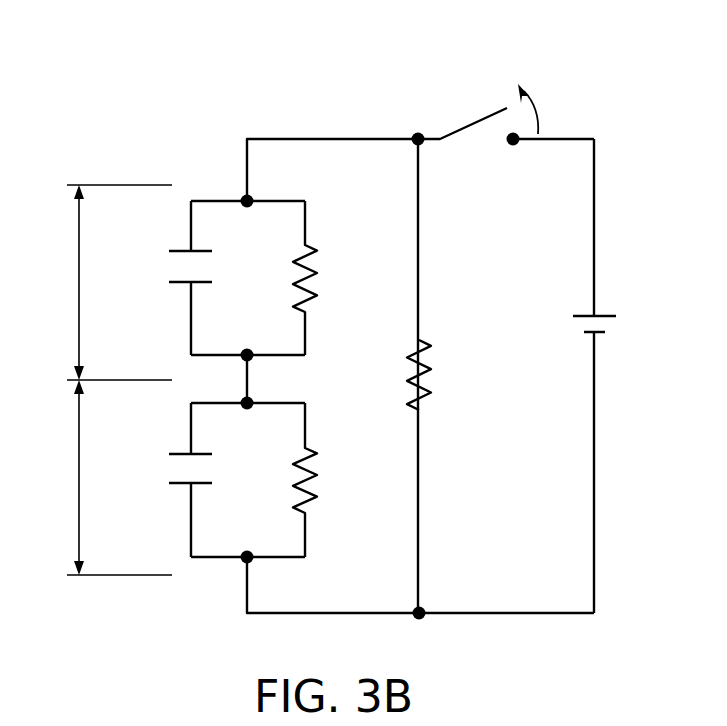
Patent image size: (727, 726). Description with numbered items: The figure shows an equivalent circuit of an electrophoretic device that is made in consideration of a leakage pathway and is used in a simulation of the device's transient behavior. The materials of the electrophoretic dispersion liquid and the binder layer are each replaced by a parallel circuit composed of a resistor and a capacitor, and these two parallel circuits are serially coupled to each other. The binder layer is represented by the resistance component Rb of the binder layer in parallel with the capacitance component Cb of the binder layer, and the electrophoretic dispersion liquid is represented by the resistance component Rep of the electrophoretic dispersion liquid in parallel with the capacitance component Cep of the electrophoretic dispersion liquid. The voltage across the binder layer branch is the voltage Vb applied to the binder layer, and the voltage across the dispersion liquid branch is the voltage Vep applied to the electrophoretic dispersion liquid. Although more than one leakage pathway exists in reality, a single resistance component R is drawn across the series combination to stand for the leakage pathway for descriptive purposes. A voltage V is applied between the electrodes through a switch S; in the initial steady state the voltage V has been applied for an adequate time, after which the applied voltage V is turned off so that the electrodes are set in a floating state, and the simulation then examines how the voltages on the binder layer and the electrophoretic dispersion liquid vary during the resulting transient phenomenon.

The capacitance component of the binder layer Cb is at (168, 278).
The resistance component of the binder layer Rb is at (325, 278).
The capacitance component of the electrophoretic dispersion liquid Cep is at (168, 480).
The resistance component of the electrophoretic dispersion liquid Rep is at (330, 480).
The resistance component R is at (436, 375).
The voltage V is at (607, 319).
The voltage applied to the binder layer Vb is at (46, 282).
The voltage applied to the electrophoretic dispersion liquid Vep is at (39, 479).
The switch S is at (478, 111).